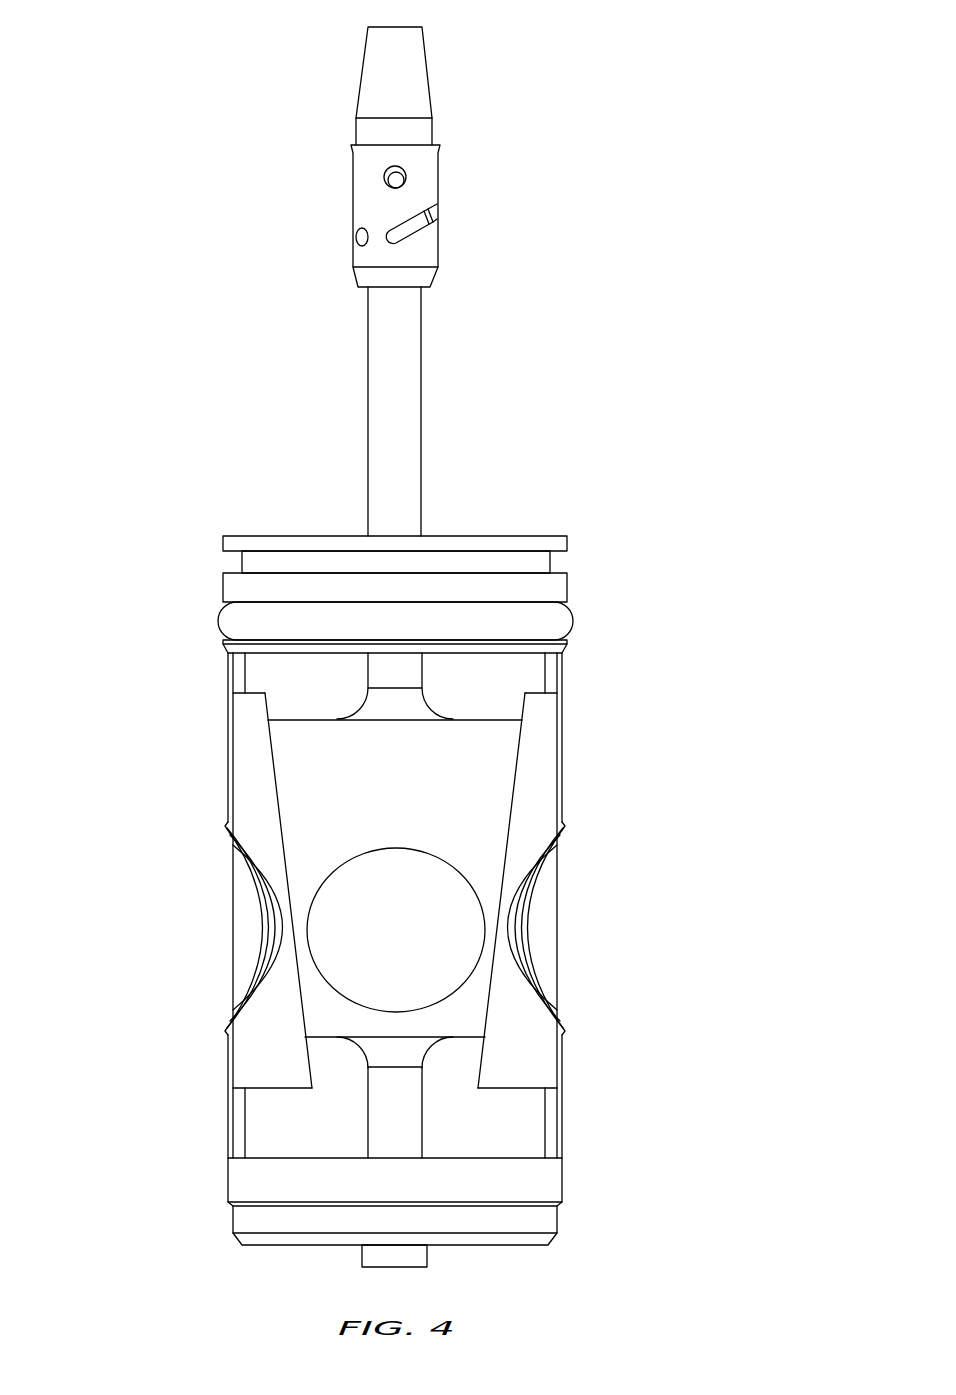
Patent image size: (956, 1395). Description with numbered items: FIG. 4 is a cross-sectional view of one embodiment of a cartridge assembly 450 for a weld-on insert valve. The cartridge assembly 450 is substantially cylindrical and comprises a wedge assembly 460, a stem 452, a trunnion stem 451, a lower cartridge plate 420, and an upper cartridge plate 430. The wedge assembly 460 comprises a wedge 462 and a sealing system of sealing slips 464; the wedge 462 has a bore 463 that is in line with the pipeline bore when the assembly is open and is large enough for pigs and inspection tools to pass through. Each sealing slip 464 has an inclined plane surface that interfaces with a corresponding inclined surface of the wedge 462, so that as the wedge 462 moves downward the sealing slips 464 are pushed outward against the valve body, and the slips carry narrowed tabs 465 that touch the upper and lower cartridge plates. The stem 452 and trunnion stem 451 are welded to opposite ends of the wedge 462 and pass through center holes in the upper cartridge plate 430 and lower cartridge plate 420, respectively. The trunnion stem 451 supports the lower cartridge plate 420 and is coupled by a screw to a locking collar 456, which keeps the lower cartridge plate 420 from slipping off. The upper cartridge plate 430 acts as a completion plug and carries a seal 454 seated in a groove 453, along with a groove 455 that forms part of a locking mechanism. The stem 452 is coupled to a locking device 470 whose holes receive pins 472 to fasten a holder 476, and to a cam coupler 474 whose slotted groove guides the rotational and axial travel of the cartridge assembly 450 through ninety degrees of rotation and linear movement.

The cartridge assembly 450 is at (133, 110).
The locking device 470 is at (595, 243).
The holder 476 is at (424, 49).
The pins 472 is at (384, 177).
The cam coupler 474 is at (434, 222).
The stem 452 is at (422, 388).
The groove 455 is at (551, 558).
The upper cartridge plate 430 is at (223, 581).
The seal 454 is at (570, 608).
The groove 453 is at (566, 640).
The wedge assembly 460 is at (144, 877).
The sealing slips 464 is at (240, 745).
The tabs 465 is at (228, 670).
The wedge 462 is at (506, 750).
The bore 463 is at (460, 904).
The trunnion stem 451 is at (422, 1121).
The lower cartridge plate 420 is at (228, 1170).
The locking collar 456 is at (427, 1259).